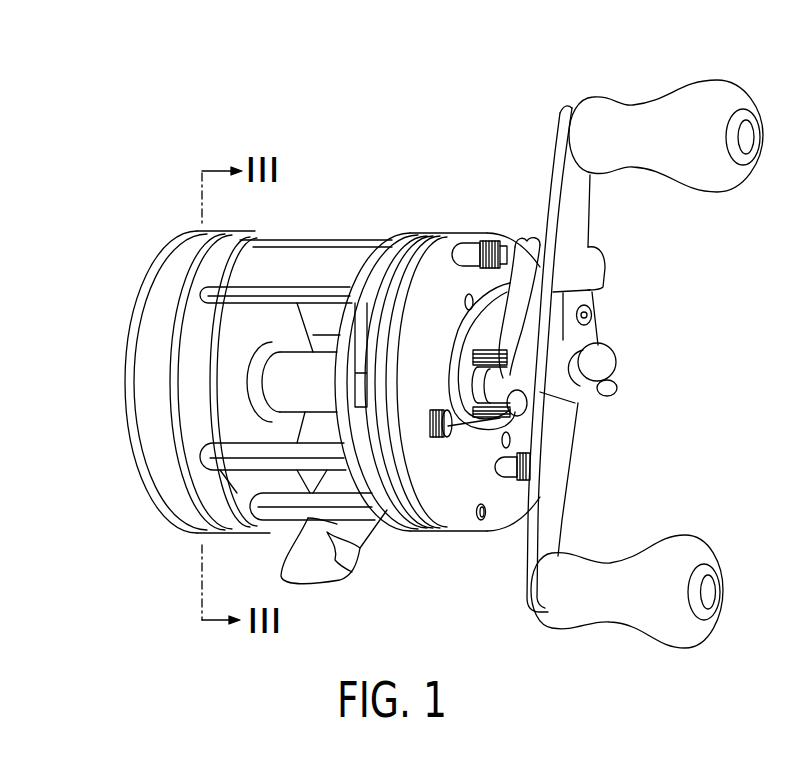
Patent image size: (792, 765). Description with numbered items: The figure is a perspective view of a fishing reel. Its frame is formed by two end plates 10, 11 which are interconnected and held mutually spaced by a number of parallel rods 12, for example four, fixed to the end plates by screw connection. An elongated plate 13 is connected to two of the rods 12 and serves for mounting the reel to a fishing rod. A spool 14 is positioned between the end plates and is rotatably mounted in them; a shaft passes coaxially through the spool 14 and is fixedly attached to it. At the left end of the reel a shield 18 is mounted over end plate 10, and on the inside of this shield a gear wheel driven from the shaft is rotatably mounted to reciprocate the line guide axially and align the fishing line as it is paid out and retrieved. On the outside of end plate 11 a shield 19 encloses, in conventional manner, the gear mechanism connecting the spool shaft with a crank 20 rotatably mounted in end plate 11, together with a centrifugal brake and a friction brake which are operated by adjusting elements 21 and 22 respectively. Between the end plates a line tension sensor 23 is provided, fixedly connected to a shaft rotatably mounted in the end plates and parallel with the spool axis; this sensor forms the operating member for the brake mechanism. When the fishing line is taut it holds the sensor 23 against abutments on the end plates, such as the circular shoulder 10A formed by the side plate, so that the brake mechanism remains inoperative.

The end plate 10 is at (247, 240).
The circular shoulder 10A is at (197, 380).
The end plate 11 is at (397, 260).
The parallel rods 12 is at (217, 453).
The elongated plate 13 is at (347, 563).
The spool 14 is at (227, 350).
The shield 18 is at (153, 265).
The shield 19 is at (503, 517).
The crank 20 is at (555, 458).
The adjusting element 21 is at (498, 415).
The adjusting element 22 is at (531, 245).
The line tension sensor 23 is at (317, 252).